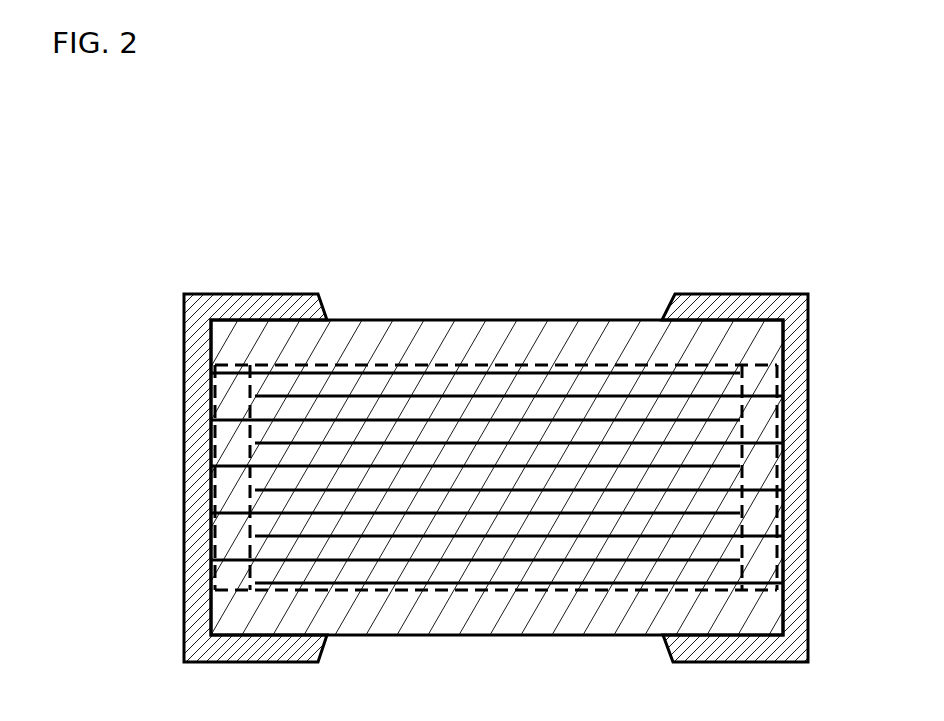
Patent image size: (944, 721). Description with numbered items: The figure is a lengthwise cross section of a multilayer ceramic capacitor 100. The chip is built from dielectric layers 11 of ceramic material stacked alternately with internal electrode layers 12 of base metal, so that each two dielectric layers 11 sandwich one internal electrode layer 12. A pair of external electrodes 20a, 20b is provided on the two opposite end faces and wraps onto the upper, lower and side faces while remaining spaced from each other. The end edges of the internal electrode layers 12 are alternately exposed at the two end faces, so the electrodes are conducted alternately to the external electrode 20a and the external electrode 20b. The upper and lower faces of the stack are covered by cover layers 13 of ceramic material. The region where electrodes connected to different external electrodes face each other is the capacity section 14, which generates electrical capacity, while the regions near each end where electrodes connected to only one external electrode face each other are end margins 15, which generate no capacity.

The multilayer ceramic capacitor 100 is at (712, 242).
The dielectric layer 11 is at (612, 548).
The internal electrode layer 12 is at (478, 513).
The cover layer 13 is at (395, 335).
The capacity section 14 is at (518, 365).
The end margin 15 is at (232, 364).
The external electrode 20a is at (207, 295).
The external electrode 20b is at (773, 295).